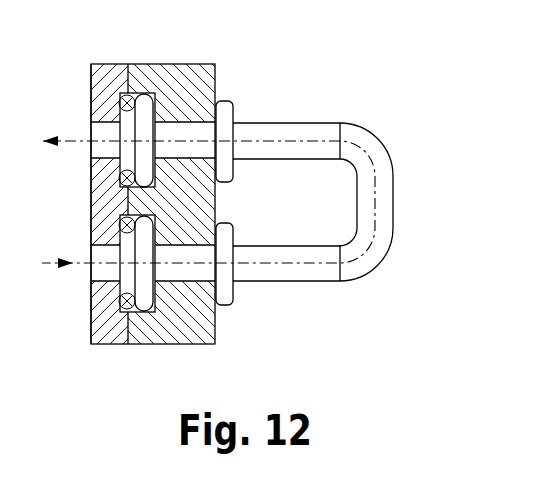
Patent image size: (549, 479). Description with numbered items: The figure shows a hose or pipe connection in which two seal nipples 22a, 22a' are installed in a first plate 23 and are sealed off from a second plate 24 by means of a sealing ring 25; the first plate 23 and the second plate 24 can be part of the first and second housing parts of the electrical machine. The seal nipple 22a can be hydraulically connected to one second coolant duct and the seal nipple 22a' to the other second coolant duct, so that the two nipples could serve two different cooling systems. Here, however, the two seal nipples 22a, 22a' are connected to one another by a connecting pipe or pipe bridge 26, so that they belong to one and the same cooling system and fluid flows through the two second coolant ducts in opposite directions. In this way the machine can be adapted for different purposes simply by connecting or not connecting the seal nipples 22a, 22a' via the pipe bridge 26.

The seal nipple 22a is at (282, 128).
The seal nipple 22a' is at (289, 278).
The first plate 23 is at (185, 77).
The second plate 24 is at (125, 96).
The sealing ring 25 is at (107, 90).
The pipe bridge 26 is at (368, 253).